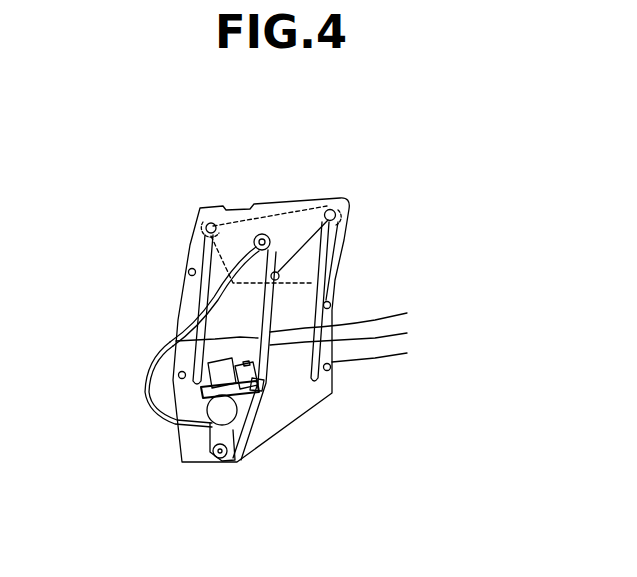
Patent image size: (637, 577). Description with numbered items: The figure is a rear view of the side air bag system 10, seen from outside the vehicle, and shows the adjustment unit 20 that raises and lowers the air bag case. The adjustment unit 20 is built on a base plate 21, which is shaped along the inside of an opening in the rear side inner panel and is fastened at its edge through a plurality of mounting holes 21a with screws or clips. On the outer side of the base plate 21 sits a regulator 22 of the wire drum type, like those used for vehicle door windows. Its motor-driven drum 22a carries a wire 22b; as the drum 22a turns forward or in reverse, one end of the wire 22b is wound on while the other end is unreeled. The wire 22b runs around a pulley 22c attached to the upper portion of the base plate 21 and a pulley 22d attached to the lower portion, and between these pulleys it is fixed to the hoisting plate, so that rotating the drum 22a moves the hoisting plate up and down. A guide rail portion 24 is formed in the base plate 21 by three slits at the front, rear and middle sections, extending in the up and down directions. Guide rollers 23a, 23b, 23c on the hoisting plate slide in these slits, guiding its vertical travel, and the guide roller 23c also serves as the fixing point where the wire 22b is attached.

The seat reclining device 10 is at (313, 178).
The adjustment unit 20 is at (292, 296).
The base plate 21 is at (287, 408).
The mounting holes 21a is at (192, 272).
The regulator 22 is at (192, 442).
The drum 22a is at (247, 430).
The wire 22b is at (248, 252).
The pulley 22c is at (263, 233).
The pulley 22d is at (217, 467).
The guide roller 23a is at (334, 208).
The guide roller 23b is at (207, 223).
The guide roller 23c is at (347, 235).
The guide rail portion 24 is at (457, 368).